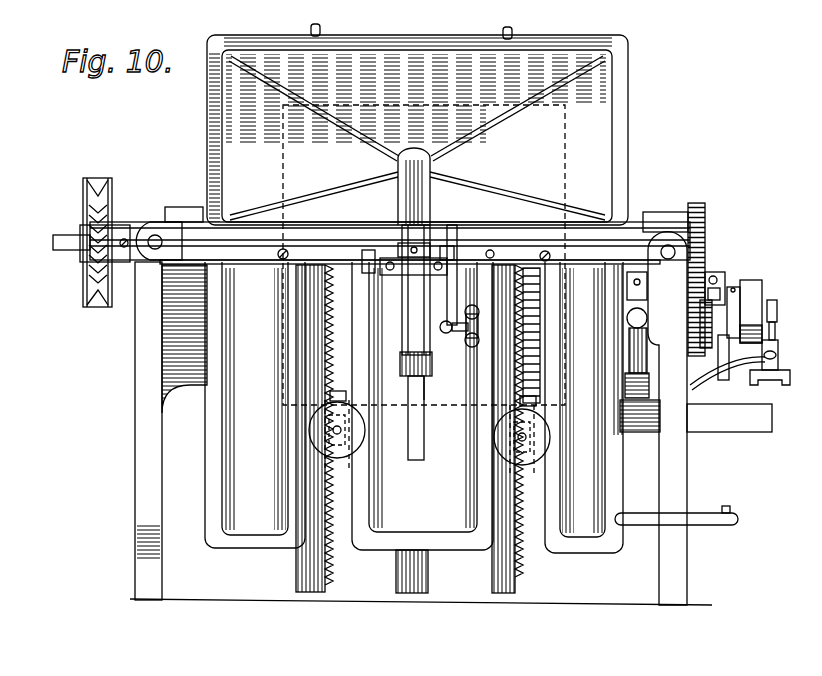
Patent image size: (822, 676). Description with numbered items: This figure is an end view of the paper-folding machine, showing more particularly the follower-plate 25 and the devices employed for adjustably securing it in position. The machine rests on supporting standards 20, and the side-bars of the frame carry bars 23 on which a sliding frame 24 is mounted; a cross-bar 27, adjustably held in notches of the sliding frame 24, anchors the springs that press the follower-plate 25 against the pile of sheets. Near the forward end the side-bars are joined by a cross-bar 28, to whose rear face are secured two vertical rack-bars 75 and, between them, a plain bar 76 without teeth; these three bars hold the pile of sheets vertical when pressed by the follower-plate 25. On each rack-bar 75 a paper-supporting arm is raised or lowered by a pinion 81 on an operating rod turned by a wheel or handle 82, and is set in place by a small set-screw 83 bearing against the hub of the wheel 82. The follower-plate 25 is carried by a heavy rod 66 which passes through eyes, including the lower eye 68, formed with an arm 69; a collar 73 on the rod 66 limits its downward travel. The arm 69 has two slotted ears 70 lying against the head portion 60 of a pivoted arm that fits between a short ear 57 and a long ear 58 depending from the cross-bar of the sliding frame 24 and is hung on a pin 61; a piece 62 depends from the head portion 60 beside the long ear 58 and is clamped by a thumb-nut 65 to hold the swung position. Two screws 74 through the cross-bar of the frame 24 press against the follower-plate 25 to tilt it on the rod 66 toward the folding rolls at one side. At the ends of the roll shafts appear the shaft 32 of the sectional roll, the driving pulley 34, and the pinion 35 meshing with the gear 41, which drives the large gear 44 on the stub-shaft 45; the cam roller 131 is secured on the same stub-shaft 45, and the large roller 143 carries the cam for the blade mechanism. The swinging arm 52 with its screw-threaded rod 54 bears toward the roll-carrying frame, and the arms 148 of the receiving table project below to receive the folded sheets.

The supporting standards 20 is at (140, 462).
The bars 23 is at (156, 250).
The sliding frame 24 is at (168, 222).
The follower-plate 25 is at (598, 164).
The cross-bar 27 is at (235, 228).
The cross-bar 28 is at (177, 355).
The shaft 32 is at (660, 222).
The driving pulley 34 is at (92, 307).
The pinion 35 is at (706, 274).
The gear 41 is at (722, 338).
The large gear 44 is at (735, 287).
The stub-shaft 45 is at (773, 320).
The swinging arm 52 is at (634, 300).
The screw-threaded rod 54 is at (630, 320).
The ear 57 is at (368, 250).
The ear 58 is at (457, 250).
The head portion 60 is at (445, 246).
The pin 61 is at (492, 250).
The piece 62 is at (449, 337).
The thumb-nut 65 is at (470, 348).
The rod 66 is at (420, 458).
The eye 68 is at (404, 364).
The arm 69 is at (426, 380).
The ears 70 is at (397, 275).
The collar 73 is at (410, 243).
The screws 74 is at (281, 258).
The rack-bars 75 is at (315, 592).
The bar 76 is at (410, 585).
The pinion 81 is at (432, 446).
The wheel or handle 82 is at (315, 432).
The set-screw 83 is at (337, 400).
The cam roller 131 is at (727, 380).
The large roller 143 is at (756, 290).
The arms 148 is at (650, 525).